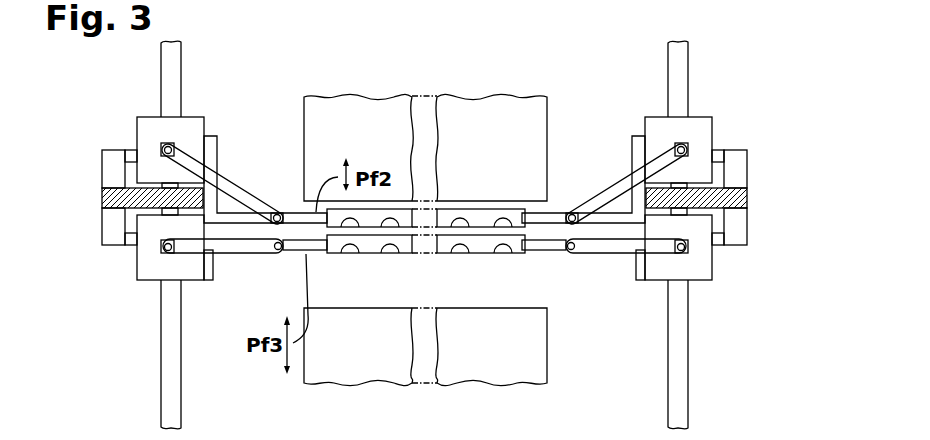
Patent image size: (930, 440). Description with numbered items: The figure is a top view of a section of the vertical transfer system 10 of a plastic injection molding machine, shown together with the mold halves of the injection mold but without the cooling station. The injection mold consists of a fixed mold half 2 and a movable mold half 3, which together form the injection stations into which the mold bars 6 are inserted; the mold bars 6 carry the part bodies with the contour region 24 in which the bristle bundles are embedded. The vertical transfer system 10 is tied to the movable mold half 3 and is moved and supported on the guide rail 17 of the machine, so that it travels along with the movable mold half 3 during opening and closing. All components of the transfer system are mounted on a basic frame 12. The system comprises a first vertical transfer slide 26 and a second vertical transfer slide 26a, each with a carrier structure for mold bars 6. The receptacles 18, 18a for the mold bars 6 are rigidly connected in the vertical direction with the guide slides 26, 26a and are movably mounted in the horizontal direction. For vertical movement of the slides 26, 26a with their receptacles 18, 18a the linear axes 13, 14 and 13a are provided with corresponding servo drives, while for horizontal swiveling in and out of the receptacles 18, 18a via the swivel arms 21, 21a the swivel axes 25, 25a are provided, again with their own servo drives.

The fixed mold half 2 is at (368, 376).
The movable mold half 3 is at (363, 113).
The mold bar 6 is at (478, 212).
The vertical transfer system 10 is at (278, 110).
The basic frame 12 is at (102, 198).
The linear axis 13 is at (103, 227).
The linear axis 13a is at (745, 228).
The linear axis 14 is at (103, 170).
The guide rail 17 is at (165, 400).
The receptacle 18 is at (293, 248).
The receptacle 18a is at (300, 212).
The swivel arm 21 is at (240, 247).
The swivel arm 21a is at (243, 193).
The contour region 24 is at (385, 255).
The swivel axis 25 is at (158, 253).
The swivel axis 25a is at (166, 146).
The first vertical transfer slide 26 is at (140, 257).
The second vertical transfer slide 26a is at (142, 142).